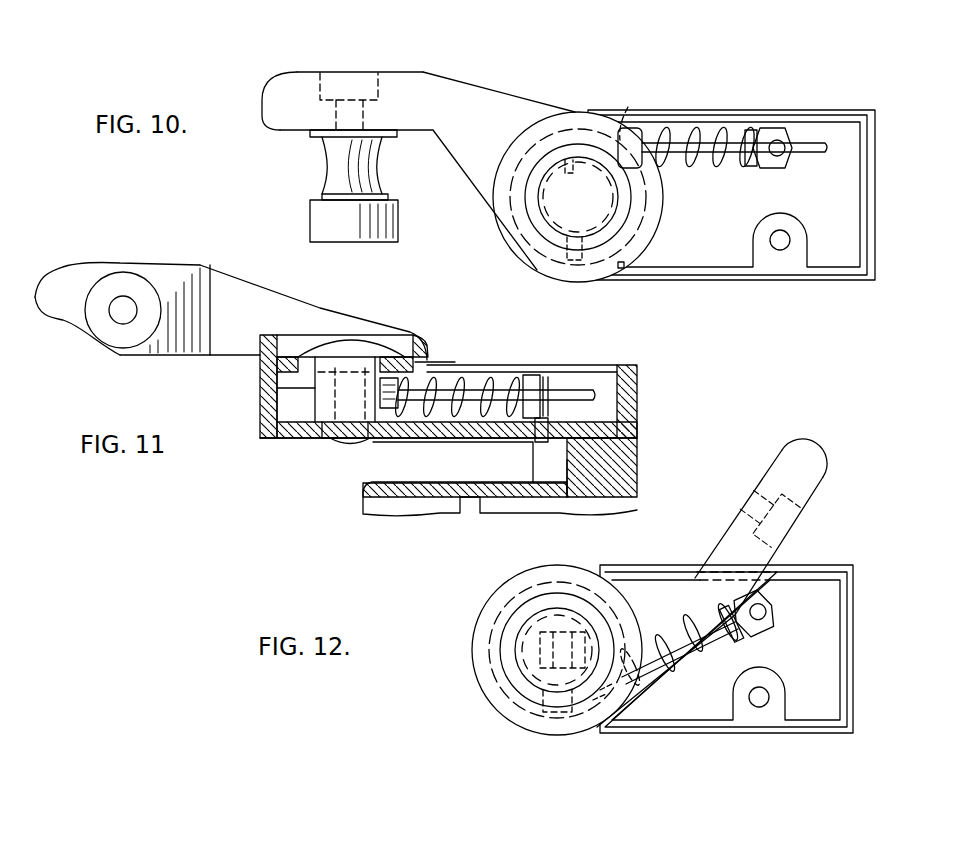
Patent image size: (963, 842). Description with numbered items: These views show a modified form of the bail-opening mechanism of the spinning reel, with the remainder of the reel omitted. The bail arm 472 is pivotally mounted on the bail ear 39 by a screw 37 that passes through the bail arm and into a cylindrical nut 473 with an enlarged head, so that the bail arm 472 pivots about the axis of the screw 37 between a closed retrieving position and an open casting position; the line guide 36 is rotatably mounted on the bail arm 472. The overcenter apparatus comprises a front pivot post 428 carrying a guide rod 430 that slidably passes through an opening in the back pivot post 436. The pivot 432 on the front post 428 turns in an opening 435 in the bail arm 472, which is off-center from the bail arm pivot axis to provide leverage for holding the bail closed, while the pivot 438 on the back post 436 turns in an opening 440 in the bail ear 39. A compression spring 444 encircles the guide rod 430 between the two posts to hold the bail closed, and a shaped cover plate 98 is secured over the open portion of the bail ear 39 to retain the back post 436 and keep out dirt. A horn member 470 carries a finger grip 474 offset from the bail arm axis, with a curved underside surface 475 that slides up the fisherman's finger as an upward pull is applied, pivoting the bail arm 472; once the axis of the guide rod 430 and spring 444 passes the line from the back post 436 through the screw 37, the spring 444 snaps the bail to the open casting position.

In FIG. 10, the line guide 36 is at (345, 170).
In FIG. 11, the line guide 36 is at (127, 335).
In FIG. 11, the screw 37 is at (340, 445).
In FIG. 10, the bail ear 39 is at (880, 252).
In FIG. 11, the bail ear 39 is at (640, 386).
In FIG. 12, the bail ear 39 is at (855, 693).
In FIG. 11, the cover plate 98 is at (637, 358).
In FIG. 10, the front pivot post 428 is at (613, 170).
In FIG. 11, the front pivot post 428 is at (392, 410).
In FIG. 10, the guide rod 430 is at (684, 131).
In FIG. 11, the guide rod 430 is at (478, 392).
In FIG. 12, the guide rod 430 is at (667, 651).
In FIG. 10, the pivot 432 is at (630, 104).
In FIG. 10, the opening 435 is at (594, 158).
In FIG. 12, the opening 435 is at (570, 718).
In FIG. 10, the back pivot post 436 is at (793, 120).
In FIG. 11, the back pivot post 436 is at (551, 381).
In FIG. 12, the back pivot post 436 is at (749, 615).
In FIG. 11, the pivot 438 is at (529, 498).
In FIG. 11, the opening 440 is at (637, 426).
In FIG. 10, the compression spring 444 is at (728, 123).
In FIG. 11, the compression spring 444 is at (470, 396).
In FIG. 12, the compression spring 444 is at (700, 668).
In FIG. 10, the horn member 470 is at (550, 57).
In FIG. 11, the horn member 470 is at (303, 286).
In FIG. 12, the horn member 470 is at (790, 553).
In FIG. 10, the bail arm 472 is at (505, 108).
In FIG. 11, the bail arm 472 is at (332, 319).
In FIG. 12, the bail arm 472 is at (715, 548).
In FIG. 11, the boss 473 is at (213, 383).
In FIG. 10, the finger grip 474 is at (298, 84).
In FIG. 11, the finger grip 474 is at (63, 281).
In FIG. 12, the finger grip 474 is at (801, 453).
In FIG. 11, the curved underside surface 475 is at (66, 322).